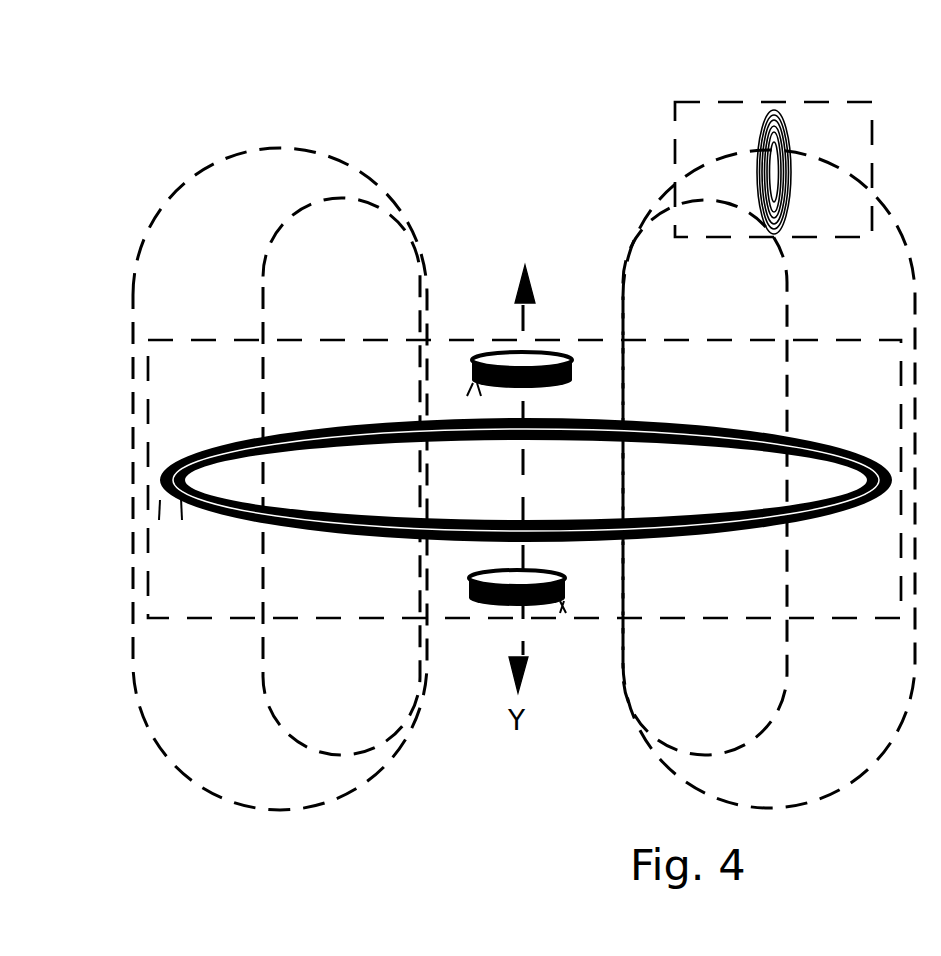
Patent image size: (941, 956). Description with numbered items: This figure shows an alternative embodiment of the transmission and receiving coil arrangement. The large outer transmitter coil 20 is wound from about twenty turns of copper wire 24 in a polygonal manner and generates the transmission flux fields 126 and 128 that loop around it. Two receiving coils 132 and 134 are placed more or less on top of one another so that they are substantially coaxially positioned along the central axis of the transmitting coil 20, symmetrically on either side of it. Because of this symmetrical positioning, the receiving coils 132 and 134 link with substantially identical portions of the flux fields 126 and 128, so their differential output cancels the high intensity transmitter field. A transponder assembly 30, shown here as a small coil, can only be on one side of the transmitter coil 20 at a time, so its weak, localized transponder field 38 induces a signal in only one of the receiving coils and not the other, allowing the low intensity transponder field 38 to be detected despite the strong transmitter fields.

The transmitter coil 20 is at (205, 447).
The copper wire 24 is at (158, 518).
The flux field 126 is at (428, 312).
The flux field 128 is at (628, 312).
The receiving coil 132 is at (547, 355).
The receiving coil 134 is at (545, 610).
The transponder assembly 30 is at (775, 172).
The transponder field 38 is at (757, 135).